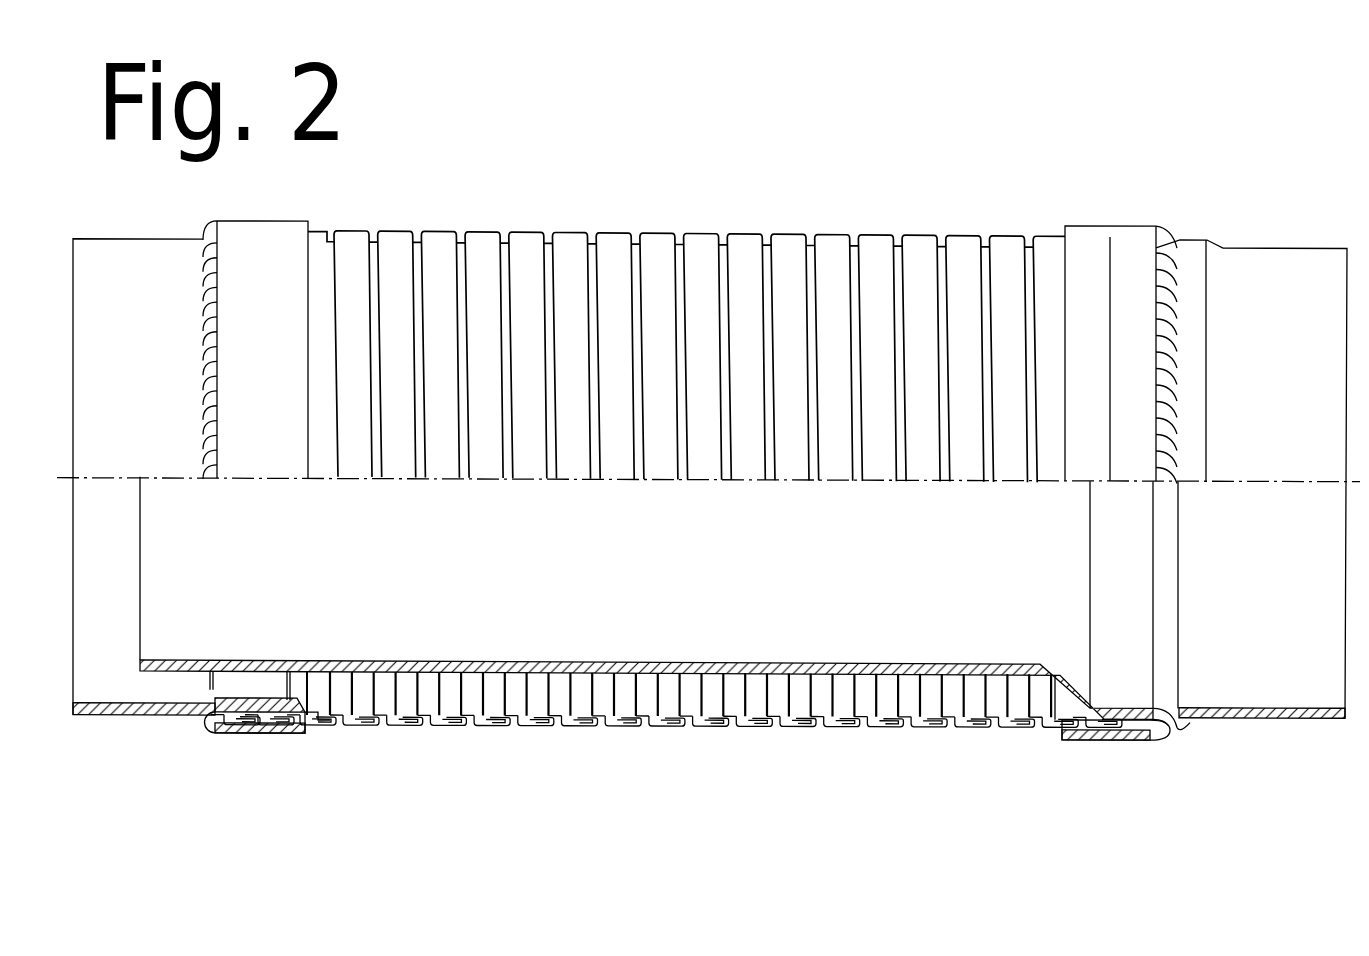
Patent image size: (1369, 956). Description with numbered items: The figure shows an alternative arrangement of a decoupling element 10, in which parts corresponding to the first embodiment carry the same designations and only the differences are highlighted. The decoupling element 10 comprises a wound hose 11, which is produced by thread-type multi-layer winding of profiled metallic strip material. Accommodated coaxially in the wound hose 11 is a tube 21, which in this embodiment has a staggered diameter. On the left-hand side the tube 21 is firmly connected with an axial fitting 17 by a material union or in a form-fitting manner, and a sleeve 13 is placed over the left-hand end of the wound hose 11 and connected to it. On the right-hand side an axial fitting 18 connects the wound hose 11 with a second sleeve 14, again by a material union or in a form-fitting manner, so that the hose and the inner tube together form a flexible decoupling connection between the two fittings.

The decoupling element 10 is at (695, 200).
The wound hose 11 is at (633, 725).
The sleeve 13 is at (245, 727).
The second sleeve 14 is at (1107, 735).
The axial fitting 17 is at (128, 708).
The axial fitting 18 is at (1282, 715).
The tube 21 is at (823, 670).